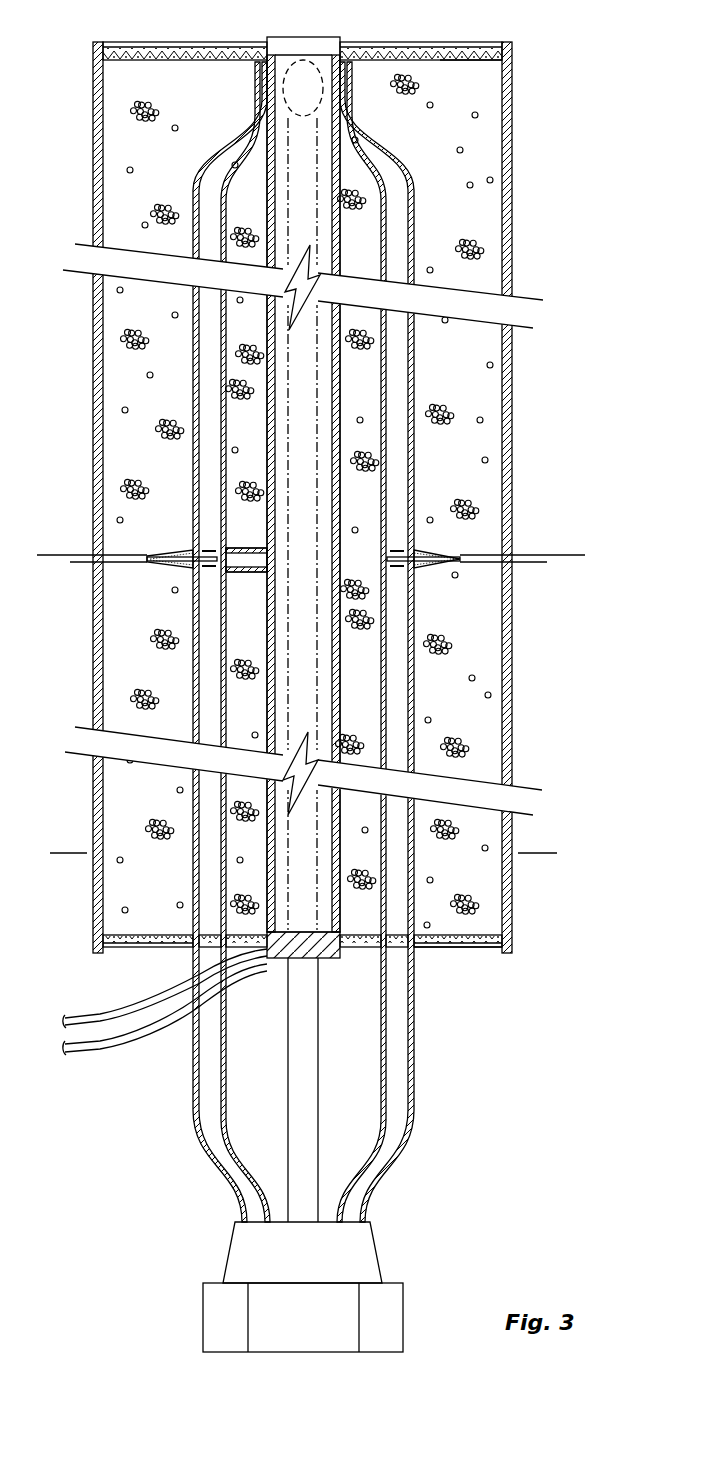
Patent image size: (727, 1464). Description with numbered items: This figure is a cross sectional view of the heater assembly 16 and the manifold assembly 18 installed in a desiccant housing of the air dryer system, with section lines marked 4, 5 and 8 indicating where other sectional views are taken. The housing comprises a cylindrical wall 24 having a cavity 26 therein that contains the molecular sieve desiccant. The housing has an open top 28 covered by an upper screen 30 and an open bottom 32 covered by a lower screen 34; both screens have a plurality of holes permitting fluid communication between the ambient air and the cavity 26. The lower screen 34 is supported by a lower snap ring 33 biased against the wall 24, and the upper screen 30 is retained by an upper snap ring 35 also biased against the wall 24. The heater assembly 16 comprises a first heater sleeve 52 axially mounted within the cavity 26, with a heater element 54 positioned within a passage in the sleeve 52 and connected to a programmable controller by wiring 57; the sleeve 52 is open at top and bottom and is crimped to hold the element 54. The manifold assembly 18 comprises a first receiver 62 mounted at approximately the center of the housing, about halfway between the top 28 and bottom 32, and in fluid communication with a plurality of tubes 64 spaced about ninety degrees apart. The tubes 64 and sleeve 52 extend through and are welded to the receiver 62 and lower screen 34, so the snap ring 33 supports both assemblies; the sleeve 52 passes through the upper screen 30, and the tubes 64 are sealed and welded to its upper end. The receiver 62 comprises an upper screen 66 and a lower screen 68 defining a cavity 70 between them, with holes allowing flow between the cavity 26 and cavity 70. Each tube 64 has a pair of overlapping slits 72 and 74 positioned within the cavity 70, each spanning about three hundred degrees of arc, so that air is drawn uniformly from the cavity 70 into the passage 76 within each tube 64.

The heater assembly 16 is at (332, 966).
The manifold assembly 18 is at (228, 1198).
The cylindrical wall 24 is at (507, 172).
The cavity 26 is at (493, 730).
The open top 28 is at (532, 115).
The upper screen 30 is at (484, 62).
The open bottom 32 is at (128, 964).
The lower snap ring 33 is at (115, 950).
The lower screen 34 is at (457, 947).
The upper snap ring 35 is at (117, 45).
The first heater sleeve 52 is at (338, 712).
The heater element 54 is at (287, 55).
The wiring 57 is at (94, 1050).
The first receiver 62 is at (284, 553).
The tubes 64 is at (205, 165).
The upper screen 66 is at (167, 556).
The lower screen 68 is at (167, 562).
The cavity 70 is at (252, 573).
The slit 72 is at (207, 549).
The slit 74 is at (208, 568).
The passage 76 is at (395, 210).
The section line 4 is at (43, 548).
The section line 5 is at (80, 556).
The section line 8 is at (50, 846).